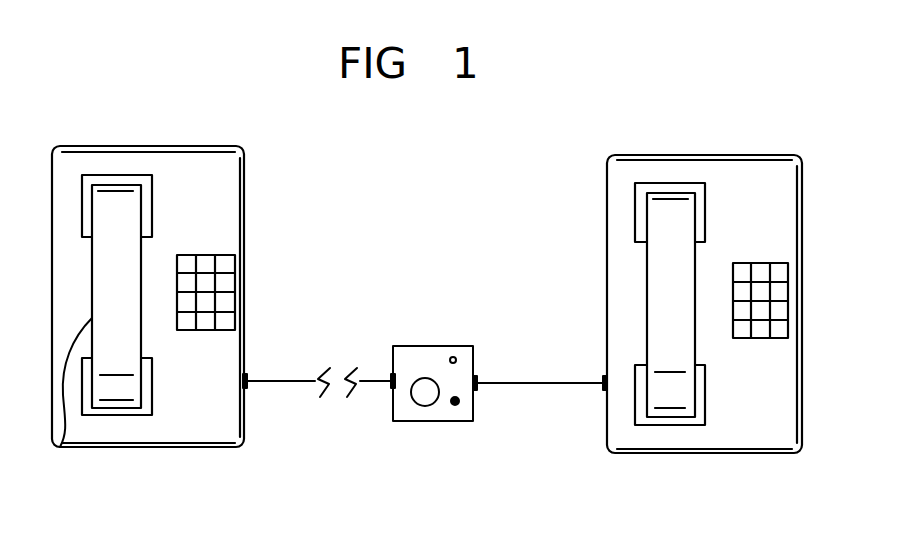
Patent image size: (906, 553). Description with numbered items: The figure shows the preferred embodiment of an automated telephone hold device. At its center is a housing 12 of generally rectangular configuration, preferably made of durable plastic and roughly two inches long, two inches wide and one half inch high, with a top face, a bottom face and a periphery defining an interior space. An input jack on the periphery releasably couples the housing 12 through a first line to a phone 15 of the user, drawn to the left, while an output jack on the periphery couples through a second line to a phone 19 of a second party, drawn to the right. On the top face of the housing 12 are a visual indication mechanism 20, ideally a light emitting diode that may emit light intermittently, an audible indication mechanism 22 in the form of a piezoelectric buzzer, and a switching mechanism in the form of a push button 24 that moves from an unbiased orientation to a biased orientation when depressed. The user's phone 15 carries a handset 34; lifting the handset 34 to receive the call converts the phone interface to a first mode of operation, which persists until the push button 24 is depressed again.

The housing 12 is at (393, 346).
The phone of a user 15 is at (241, 147).
The phone of a second party 19 is at (792, 155).
The visual indication mechanism 20 is at (456, 357).
The audible indication mechanism 22 is at (455, 405).
The push button 24 is at (425, 406).
The handset 34 is at (60, 447).